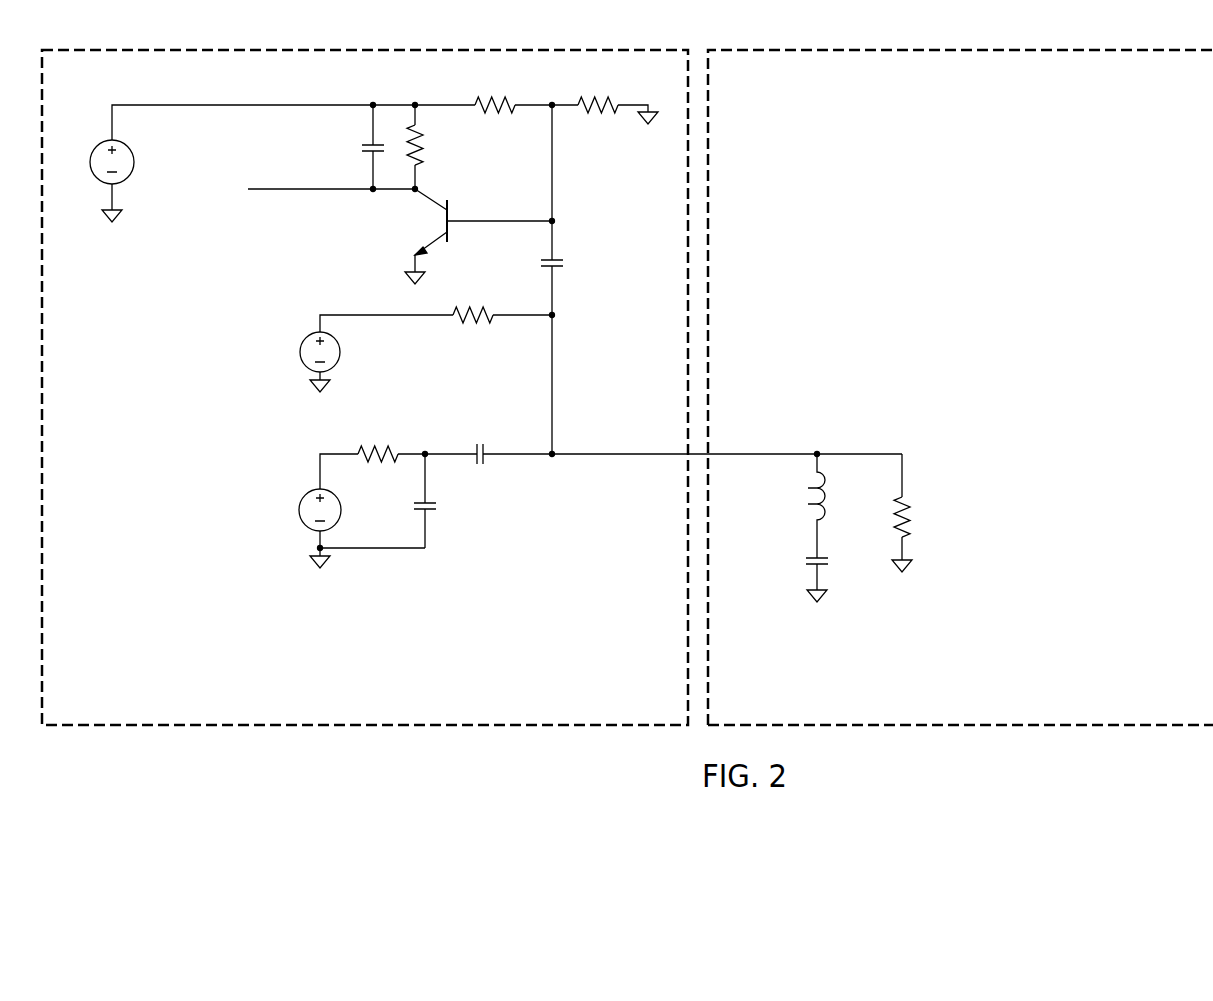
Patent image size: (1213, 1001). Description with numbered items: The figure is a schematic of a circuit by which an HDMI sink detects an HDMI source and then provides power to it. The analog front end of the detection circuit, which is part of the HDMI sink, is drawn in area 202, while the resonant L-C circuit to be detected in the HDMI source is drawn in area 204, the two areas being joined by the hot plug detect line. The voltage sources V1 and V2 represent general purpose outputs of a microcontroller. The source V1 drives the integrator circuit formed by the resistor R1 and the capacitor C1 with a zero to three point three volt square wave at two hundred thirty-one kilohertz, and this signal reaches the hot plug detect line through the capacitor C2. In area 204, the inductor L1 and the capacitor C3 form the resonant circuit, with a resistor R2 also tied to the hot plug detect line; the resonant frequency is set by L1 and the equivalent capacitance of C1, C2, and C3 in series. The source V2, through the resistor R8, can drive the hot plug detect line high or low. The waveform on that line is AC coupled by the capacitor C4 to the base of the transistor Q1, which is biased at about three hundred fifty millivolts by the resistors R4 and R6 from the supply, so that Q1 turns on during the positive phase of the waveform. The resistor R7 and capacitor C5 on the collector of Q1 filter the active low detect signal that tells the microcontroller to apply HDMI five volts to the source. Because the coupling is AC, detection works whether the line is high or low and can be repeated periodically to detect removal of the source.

The area 202 is at (670, 702).
The area 204 is at (1208, 702).
The transistor Q1 is at (462, 236).
The resistor R1 is at (417, 459).
The resistor R2 is at (915, 513).
The resistor R4 is at (495, 104).
The resistor R6 is at (598, 104).
The resistor R7 is at (433, 147).
The resistor R8 is at (502, 315).
The capacitor C1 is at (436, 500).
The capacitor C2 is at (577, 452).
The capacitor C3 is at (835, 569).
The capacitor C4 is at (558, 279).
The capacitor C5 is at (379, 147).
The inductor L1 is at (1000, 479).
The voltage source V1 is at (390, 522).
The voltage source V2 is at (376, 353).